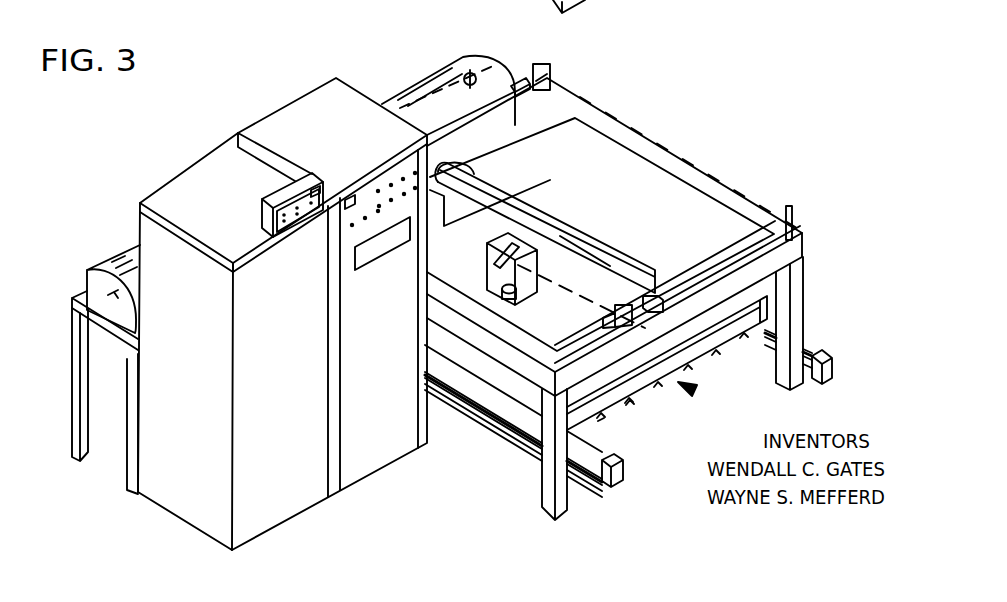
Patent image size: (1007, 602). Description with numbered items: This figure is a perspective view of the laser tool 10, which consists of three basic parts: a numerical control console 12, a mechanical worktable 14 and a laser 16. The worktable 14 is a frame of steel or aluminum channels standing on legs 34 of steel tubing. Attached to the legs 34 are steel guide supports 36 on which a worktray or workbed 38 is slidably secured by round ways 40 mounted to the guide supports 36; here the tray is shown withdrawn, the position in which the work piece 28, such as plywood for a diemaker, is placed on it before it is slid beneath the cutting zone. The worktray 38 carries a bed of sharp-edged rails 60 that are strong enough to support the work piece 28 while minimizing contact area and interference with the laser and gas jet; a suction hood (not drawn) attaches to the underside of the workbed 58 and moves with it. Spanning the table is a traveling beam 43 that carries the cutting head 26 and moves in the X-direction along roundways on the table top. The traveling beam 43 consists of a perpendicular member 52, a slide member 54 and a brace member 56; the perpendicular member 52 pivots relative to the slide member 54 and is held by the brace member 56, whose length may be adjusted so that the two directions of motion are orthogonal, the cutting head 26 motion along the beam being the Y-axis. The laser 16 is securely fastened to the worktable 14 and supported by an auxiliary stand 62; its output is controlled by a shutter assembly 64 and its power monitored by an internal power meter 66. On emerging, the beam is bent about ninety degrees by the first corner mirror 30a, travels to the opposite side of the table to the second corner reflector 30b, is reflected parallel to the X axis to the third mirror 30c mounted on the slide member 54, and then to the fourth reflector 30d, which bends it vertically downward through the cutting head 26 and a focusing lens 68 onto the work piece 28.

The laser tool 10 is at (483, 501).
The numerical control console 12 is at (274, 102).
The mechanical worktable 14 is at (756, 281).
The laser 16 is at (393, 92).
The cutting head 26 is at (488, 270).
The work piece 28 is at (631, 400).
The first corner mirror 30a is at (551, 70).
The second corner reflector 30b is at (792, 205).
The third mirror 30c is at (628, 304).
The fourth reflector 30d is at (508, 240).
The legs 34 is at (547, 497).
The guide supports 36 is at (487, 412).
The worktray 38 is at (720, 360).
The round ways 40 is at (624, 478).
The traveling beam 43 is at (606, 272).
The perpendicular member 52 is at (470, 166).
The slide member 54 is at (712, 280).
The brace member 56 is at (600, 245).
The workbed 58 is at (696, 390).
The sharp-edged rails 60 is at (655, 388).
The auxiliary stand 62 is at (73, 438).
The shutter assembly 64 is at (528, 77).
The internal power meter 66 is at (468, 76).
The focusing lens 68 is at (518, 297).